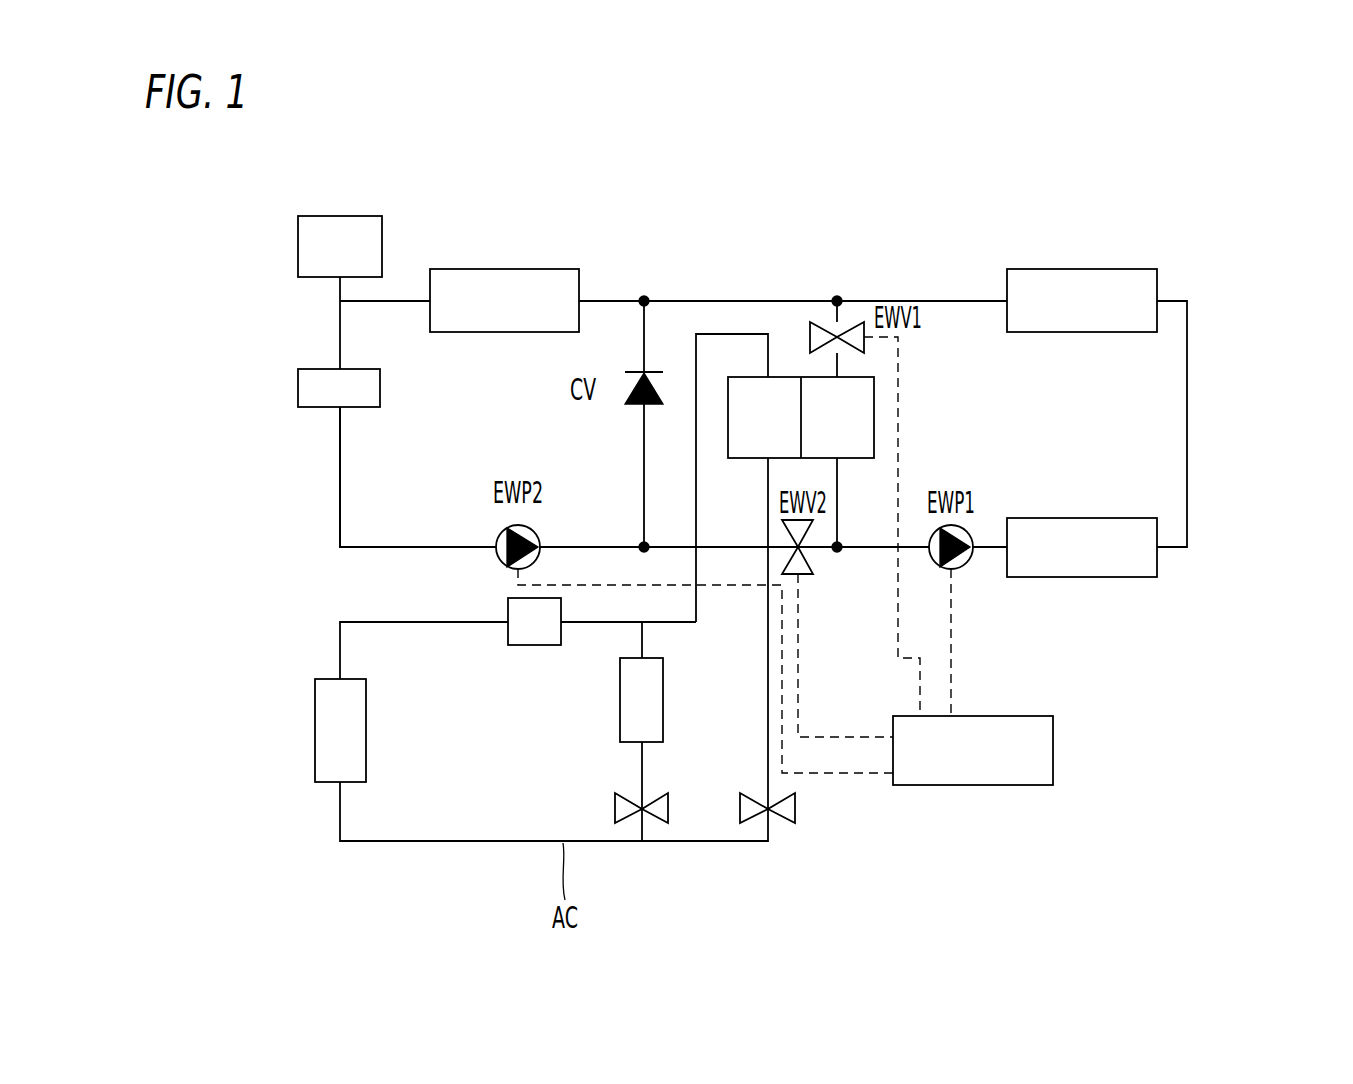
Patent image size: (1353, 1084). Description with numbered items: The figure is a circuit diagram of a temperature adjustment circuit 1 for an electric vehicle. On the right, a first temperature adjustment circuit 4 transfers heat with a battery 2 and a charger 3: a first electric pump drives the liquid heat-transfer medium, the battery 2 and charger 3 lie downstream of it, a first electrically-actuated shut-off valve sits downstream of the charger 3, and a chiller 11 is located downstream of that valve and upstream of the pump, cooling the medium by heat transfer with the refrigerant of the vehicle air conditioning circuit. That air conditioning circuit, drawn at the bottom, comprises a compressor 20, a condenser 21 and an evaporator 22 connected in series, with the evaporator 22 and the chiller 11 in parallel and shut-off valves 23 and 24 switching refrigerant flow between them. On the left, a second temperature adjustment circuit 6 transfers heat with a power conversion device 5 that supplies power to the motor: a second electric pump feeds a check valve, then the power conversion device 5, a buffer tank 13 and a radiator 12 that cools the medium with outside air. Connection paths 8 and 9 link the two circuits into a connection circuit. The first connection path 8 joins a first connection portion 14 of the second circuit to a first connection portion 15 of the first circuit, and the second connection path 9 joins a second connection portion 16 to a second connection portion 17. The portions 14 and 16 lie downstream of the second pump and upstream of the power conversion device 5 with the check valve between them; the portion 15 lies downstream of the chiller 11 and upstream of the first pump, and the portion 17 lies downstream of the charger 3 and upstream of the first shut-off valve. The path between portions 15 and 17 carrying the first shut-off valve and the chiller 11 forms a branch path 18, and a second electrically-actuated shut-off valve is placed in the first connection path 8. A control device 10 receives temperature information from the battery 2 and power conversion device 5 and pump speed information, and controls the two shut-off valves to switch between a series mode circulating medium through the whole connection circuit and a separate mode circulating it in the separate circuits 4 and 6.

The temperature adjustment circuit 1 is at (1172, 167).
The battery 2 is at (1087, 579).
The charger 3 is at (1080, 268).
The first temperature adjustment circuit 4 is at (1187, 425).
The power conversion device 5 is at (508, 268).
The second temperature adjustment circuit 6 is at (338, 490).
The first connection path 8 is at (724, 545).
The second connection path 9 is at (744, 298).
The control device 10 is at (1053, 745).
The chiller 11 is at (874, 410).
The radiator 12 is at (298, 392).
The buffer tank 13 is at (298, 250).
The first connection portion 14 is at (640, 544).
The first connection portion 15 is at (840, 552).
The second connection portion 16 is at (645, 297).
The second connection portion 17 is at (838, 297).
The branch path 18 is at (837, 499).
The compressor 20 is at (538, 647).
The condenser 21 is at (366, 724).
The evaporator 22 is at (663, 699).
The shut-off valve 23 is at (668, 805).
The shut-off valve 24 is at (795, 804).